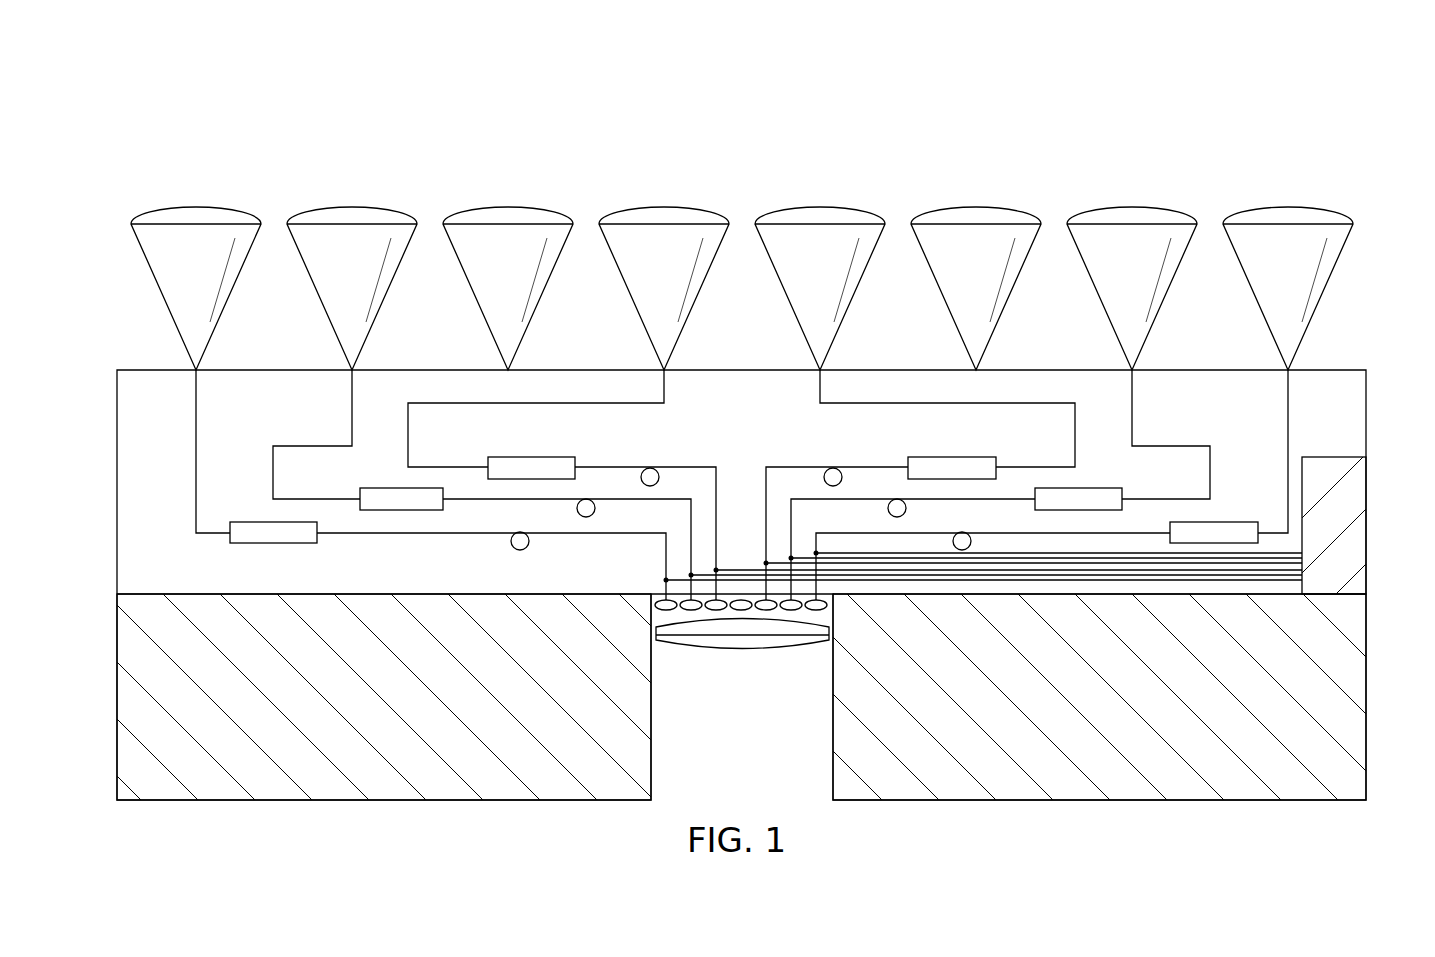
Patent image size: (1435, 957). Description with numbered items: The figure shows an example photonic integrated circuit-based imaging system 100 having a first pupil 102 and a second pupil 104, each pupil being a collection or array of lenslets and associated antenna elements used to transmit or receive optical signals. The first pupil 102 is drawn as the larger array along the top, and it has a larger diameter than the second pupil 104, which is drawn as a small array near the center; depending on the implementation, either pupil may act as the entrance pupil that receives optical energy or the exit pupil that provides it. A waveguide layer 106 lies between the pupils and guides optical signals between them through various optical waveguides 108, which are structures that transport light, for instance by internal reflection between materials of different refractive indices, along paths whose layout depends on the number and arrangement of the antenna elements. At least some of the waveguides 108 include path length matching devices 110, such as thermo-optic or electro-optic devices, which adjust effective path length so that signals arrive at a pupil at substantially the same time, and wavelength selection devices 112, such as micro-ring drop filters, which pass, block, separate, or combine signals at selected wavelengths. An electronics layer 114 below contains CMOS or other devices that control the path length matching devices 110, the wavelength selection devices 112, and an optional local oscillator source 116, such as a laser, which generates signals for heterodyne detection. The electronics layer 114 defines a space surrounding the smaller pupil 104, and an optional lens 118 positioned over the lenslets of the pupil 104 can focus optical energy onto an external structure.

The photonic integrated circuit-based imaging system 100 is at (445, 126).
The first pupil 102 is at (1345, 298).
The second pupil 104 is at (749, 594).
The waveguide layer 106 is at (125, 480).
The optical waveguides 108 is at (350, 417).
The path length matching devices 110 is at (245, 520).
The wavelength selection devices 112 is at (640, 474).
The electronics layer 114 is at (125, 688).
The local oscillator (LO) source 116 is at (1327, 467).
The lens 118 is at (742, 650).